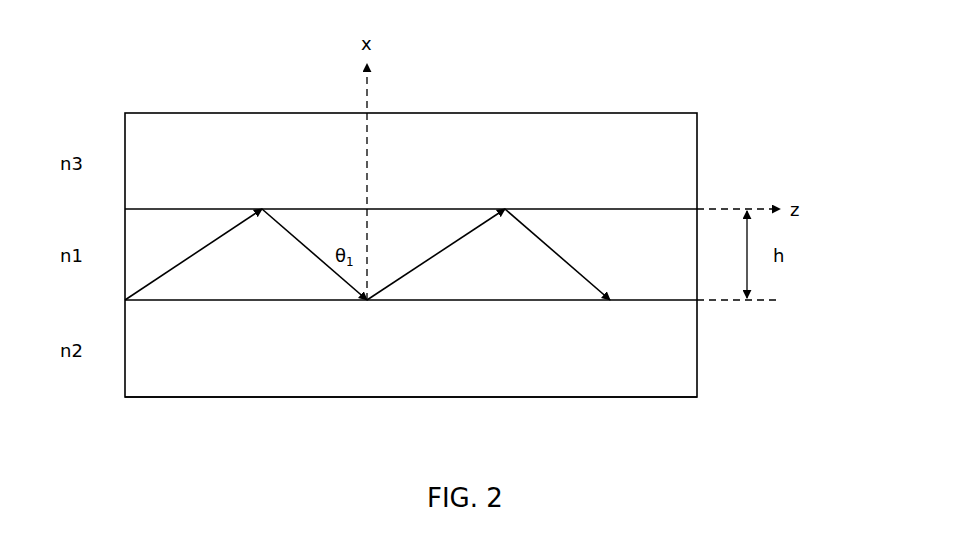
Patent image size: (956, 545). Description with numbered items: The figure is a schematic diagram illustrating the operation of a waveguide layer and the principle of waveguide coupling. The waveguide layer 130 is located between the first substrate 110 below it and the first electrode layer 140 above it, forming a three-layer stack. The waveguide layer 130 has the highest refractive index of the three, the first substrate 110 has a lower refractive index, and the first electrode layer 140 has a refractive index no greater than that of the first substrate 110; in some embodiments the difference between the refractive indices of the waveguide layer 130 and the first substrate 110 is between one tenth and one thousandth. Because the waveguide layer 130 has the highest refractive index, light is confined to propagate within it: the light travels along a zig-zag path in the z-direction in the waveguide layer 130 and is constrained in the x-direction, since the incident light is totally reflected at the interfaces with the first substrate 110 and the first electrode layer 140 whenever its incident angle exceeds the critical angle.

The first substrate 110 is at (411, 391).
The waveguide layer 130 is at (411, 326).
The first electrode layer 140 is at (411, 126).